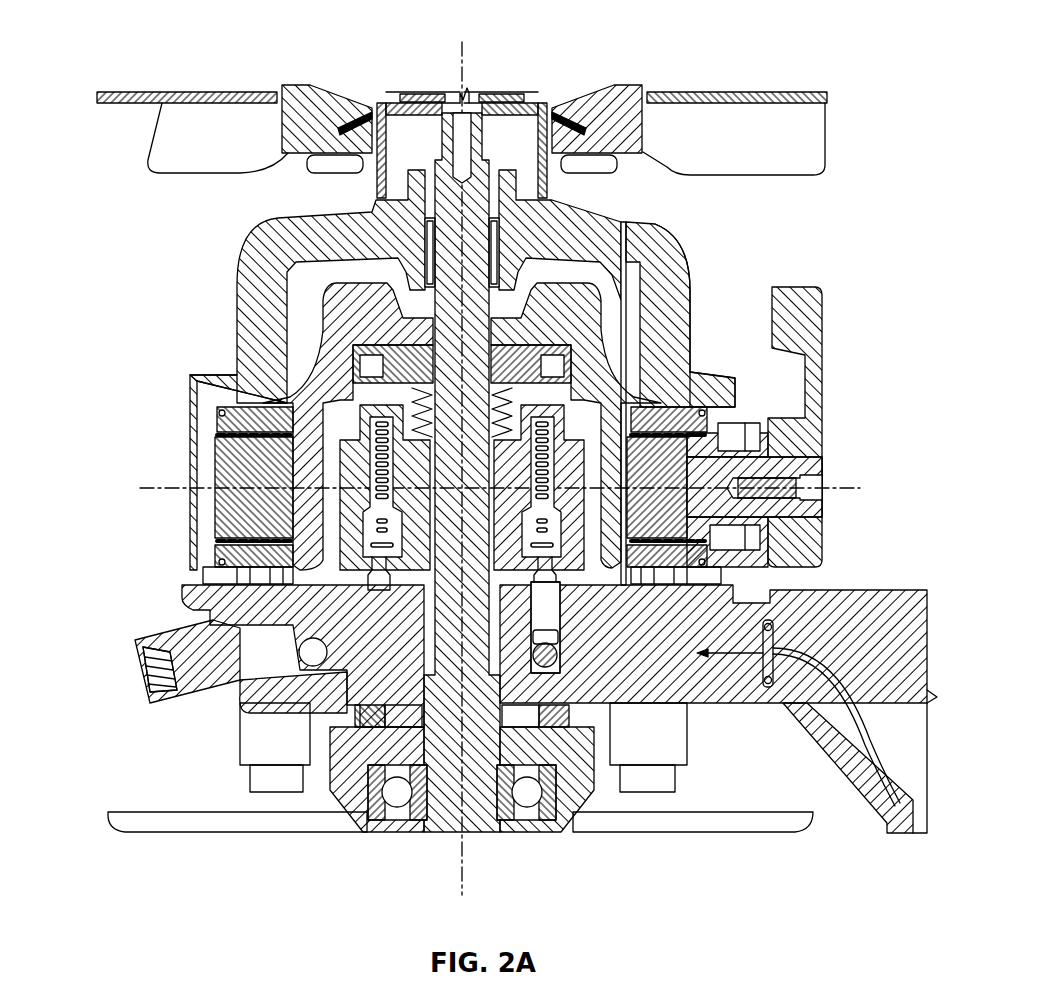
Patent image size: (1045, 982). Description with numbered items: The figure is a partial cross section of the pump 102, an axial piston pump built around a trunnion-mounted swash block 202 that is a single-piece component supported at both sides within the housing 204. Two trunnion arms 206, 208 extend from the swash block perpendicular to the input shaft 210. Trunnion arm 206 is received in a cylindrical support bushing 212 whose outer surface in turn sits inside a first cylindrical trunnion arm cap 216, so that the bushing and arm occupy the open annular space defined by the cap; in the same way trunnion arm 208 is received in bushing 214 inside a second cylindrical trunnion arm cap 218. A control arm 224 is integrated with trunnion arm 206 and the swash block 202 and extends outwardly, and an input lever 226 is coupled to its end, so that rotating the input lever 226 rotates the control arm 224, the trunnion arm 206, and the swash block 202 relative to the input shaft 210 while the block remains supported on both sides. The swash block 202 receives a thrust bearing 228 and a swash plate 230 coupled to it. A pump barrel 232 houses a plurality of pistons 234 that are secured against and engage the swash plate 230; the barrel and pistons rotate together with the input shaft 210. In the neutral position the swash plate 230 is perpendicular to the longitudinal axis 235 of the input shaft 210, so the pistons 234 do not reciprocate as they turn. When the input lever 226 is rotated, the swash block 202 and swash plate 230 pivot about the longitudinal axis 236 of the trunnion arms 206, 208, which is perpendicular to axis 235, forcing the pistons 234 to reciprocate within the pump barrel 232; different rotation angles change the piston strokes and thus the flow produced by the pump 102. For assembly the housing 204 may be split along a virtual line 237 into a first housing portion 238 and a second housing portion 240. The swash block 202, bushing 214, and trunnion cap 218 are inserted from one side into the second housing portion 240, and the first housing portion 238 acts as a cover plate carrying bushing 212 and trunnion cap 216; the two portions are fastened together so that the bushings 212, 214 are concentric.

The pump 102 is at (114, 168).
The trunnion-mounted swash block 202 is at (345, 318).
The housing 204 is at (668, 258).
The trunnion arm 206 is at (767, 440).
The trunnion arm 208 is at (232, 458).
The input shaft 210 is at (538, 197).
The cylindrical support bushing 212 is at (690, 420).
The cylindrical support bushing 214 is at (250, 433).
The first cylindrical trunnion arm cap 216 is at (637, 407).
The second cylindrical trunnion arm cap 218 is at (275, 395).
The control arm 224 is at (753, 468).
The input lever 226 is at (800, 313).
The thrust bearing 228 is at (521, 350).
The swash plate 230 is at (563, 400).
The pump barrel 232 is at (295, 565).
The piston 234 is at (367, 493).
The longitudinal axis of the input shaft 235 is at (460, 43).
The longitudinal axis of the trunnion arms 236 is at (857, 488).
The virtual line 237 is at (627, 240).
The first housing portion 238 is at (673, 300).
The second housing portion 240 is at (573, 222).